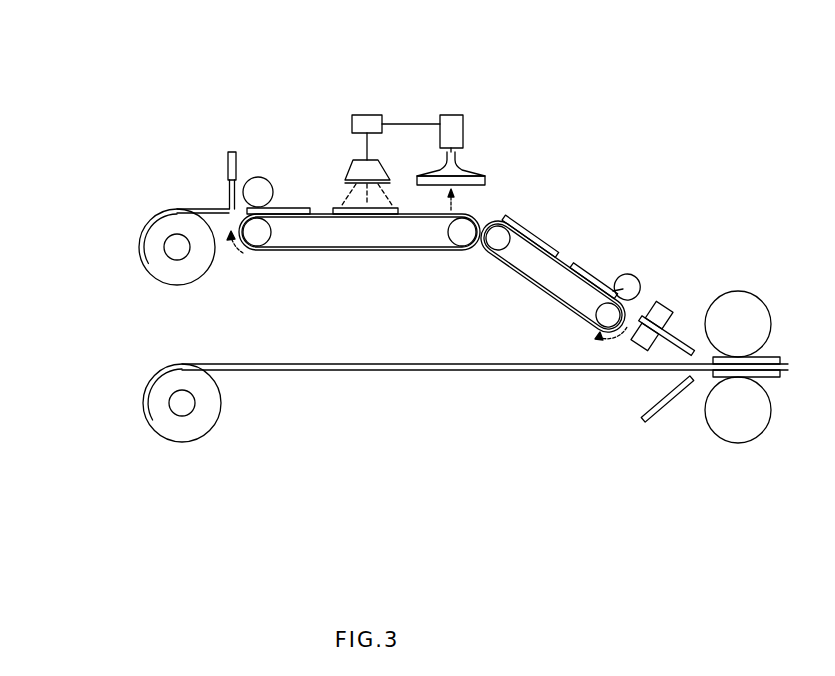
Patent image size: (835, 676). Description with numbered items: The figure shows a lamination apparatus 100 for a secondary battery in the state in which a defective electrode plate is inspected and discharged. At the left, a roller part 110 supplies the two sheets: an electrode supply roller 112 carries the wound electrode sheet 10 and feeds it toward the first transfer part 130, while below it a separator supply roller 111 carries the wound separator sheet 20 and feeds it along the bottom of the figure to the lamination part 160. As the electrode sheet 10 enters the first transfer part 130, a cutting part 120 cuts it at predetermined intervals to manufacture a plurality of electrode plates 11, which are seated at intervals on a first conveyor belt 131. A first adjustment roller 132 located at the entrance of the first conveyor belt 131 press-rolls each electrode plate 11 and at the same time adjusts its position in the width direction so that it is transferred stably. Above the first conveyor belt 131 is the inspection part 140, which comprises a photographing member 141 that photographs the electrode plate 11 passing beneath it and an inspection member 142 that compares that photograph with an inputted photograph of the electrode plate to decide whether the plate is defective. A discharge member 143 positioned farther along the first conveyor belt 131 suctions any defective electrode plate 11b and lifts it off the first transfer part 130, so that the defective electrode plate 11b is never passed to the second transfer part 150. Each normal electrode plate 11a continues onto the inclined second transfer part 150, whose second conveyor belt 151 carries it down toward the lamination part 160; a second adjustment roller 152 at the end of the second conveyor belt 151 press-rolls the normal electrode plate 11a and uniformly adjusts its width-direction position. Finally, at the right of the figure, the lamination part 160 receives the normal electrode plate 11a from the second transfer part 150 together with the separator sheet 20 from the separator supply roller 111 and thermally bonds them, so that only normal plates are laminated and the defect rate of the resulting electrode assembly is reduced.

The lamination apparatus 100 is at (606, 80).
The electrode sheet 10 is at (178, 207).
The electrode plate 11 is at (305, 219).
The normal electrode plate 11a is at (570, 230).
The defective electrode plate 11b is at (486, 182).
The separator sheet 20 is at (445, 372).
The roller part 110 is at (84, 290).
The separator supply roller 111 is at (173, 400).
The electrode supply roller 112 is at (170, 250).
The cutting part 120 is at (232, 151).
The first transfer part 130 is at (353, 171).
The first conveyor belt 131 is at (263, 230).
The first adjustment roller 132 is at (256, 178).
The inspection part 140 is at (348, 54).
The photographing member 141 is at (389, 165).
The inspection member 142 is at (352, 115).
The discharge member 143 is at (460, 115).
The second transfer part 150 is at (584, 281).
The second conveyor belt 151 is at (552, 276).
The second adjustment roller 152 is at (607, 314).
The lamination part 160 is at (740, 292).